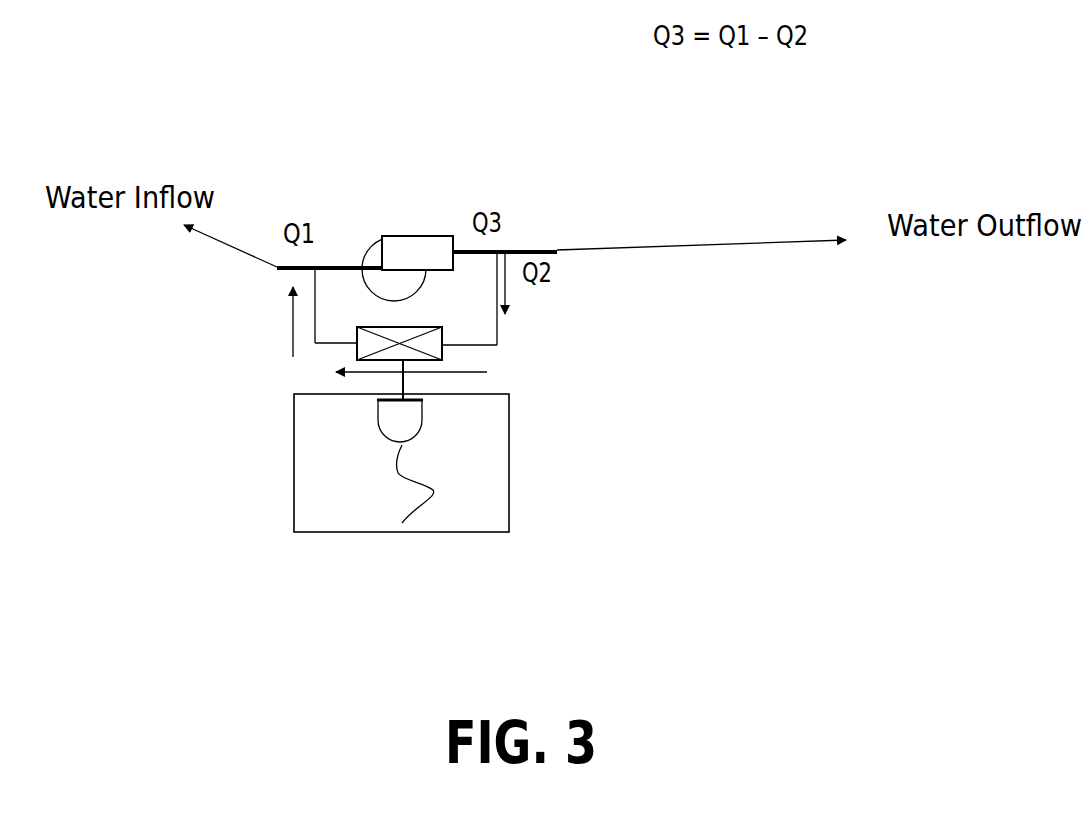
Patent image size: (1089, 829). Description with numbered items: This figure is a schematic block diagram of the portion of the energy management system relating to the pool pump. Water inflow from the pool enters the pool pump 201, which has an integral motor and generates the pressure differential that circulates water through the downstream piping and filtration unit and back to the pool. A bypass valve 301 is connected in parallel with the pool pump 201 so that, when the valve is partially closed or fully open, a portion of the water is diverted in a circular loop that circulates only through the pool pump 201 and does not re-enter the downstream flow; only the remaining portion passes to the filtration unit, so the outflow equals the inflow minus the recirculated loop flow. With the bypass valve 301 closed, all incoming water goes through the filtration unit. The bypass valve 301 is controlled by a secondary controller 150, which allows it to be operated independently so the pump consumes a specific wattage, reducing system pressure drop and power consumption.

The pool pump 201 is at (432, 236).
The bypass valve 301 is at (442, 358).
The secondary controller 150 is at (509, 518).